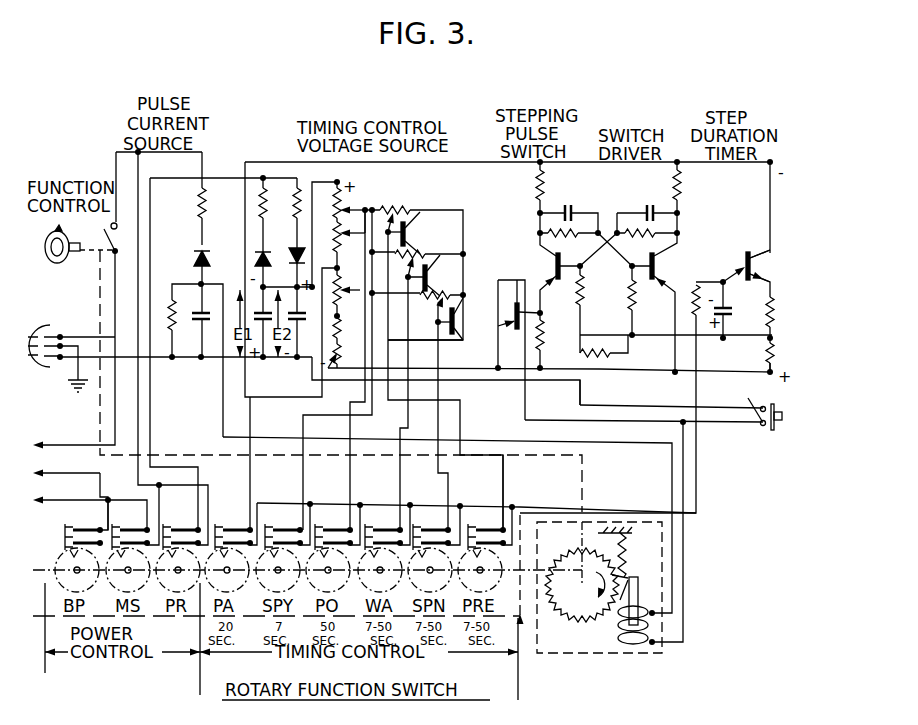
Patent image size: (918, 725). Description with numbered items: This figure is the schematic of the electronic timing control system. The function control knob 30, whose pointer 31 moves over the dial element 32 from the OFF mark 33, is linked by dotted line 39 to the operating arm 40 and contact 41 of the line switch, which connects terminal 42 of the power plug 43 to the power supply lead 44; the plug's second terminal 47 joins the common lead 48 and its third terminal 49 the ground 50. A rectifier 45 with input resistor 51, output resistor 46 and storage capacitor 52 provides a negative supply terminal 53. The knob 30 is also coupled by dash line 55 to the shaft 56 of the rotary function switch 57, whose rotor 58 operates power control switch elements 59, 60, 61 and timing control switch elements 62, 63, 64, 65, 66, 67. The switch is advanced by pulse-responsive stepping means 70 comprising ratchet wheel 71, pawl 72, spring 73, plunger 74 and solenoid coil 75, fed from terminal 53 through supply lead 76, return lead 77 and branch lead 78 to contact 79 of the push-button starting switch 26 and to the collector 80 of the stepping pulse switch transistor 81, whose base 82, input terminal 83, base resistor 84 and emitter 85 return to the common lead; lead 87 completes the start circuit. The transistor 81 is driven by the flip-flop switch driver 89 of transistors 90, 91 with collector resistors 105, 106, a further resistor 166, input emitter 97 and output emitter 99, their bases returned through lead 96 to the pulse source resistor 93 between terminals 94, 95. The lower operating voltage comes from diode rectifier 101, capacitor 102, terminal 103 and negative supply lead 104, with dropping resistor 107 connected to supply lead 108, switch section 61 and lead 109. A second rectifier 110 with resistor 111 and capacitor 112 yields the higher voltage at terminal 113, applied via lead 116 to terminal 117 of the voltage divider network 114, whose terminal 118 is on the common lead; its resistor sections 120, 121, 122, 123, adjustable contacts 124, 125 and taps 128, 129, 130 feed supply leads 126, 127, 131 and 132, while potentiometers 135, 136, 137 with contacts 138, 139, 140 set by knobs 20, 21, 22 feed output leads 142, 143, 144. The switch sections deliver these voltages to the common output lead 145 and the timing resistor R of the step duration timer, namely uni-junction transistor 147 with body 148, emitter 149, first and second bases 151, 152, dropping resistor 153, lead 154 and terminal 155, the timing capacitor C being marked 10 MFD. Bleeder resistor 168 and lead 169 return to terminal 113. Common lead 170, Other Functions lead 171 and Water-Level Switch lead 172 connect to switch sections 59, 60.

The 10 MFD capacitor value 10 is at (645, 399).
The control knob 20 is at (426, 233).
The control knob 21 is at (435, 275).
The control knob 22 is at (459, 325).
The push-button starting switch 26 is at (811, 418).
The function control knob 30 is at (56, 263).
The pointer 31 is at (52, 244).
The dial element 32 is at (68, 264).
The OFF position mark 33 is at (55, 229).
The dotted line connection 39 is at (97, 246).
The operating arm 40 is at (109, 239).
The contact 41 is at (116, 224).
The terminal 42 is at (60, 335).
The power supply line plug 43 is at (47, 330).
The power supply lead 44 is at (203, 170).
The rectifier 45 is at (203, 252).
The output resistor 46 is at (171, 327).
The second line plug terminal 47 is at (57, 359).
The common power supply lead 48 is at (160, 360).
The third terminal 49 is at (62, 345).
The common ground 50 is at (72, 386).
The series voltage-dropping input resistor 51 is at (198, 210).
The storage capacitor 52 is at (204, 314).
The supply terminal 53 is at (200, 282).
The dash line connection 55 is at (190, 455).
The operating shaft 56 is at (545, 565).
The rotary function control switch 57 is at (521, 625).
The rotor 58 is at (52, 560).
The switch element 59 is at (82, 530).
The switch element 60 is at (136, 530).
The switch element 61 is at (174, 530).
The switch element 62 is at (227, 530).
The switch element 63 is at (277, 538).
The switch element 64 is at (327, 540).
The switch element 65 is at (377, 540).
The switch element 66 is at (426, 540).
The switch element 67 is at (480, 540).
The pulse-responsive stepping means 70 is at (754, 570).
The ratchet wheel 71 is at (572, 620).
The driving pawl 72 is at (620, 602).
The return spring 73 is at (624, 553).
The operating plunger 74 is at (631, 578).
The solenoid operating coil 75 is at (640, 648).
The supply lead 76 is at (623, 445).
The return lead 77 is at (685, 548).
The branch lead 78 is at (632, 422).
The contact 79 is at (757, 404).
The collector 80 is at (497, 306).
The stepping pulse switch 81 is at (519, 299).
The base 82 is at (515, 331).
The input terminal 83 is at (541, 313).
The base resistor 84 is at (543, 344).
The emitter 85 is at (498, 326).
The lead 87 is at (609, 406).
The switch driver circuit 89 is at (628, 193).
The transistor 90 is at (588, 260).
The transistor 91 is at (652, 260).
The resistor 93 is at (777, 356).
The positive terminal 94 is at (763, 369).
The negative terminal 95 is at (775, 339).
The lead 96 is at (655, 337).
The input emitter 97 is at (661, 284).
The output emitter 99 is at (550, 276).
The diode rectifier 101 is at (258, 249).
The supply capacitor 102 is at (259, 310).
The supply terminal 103 is at (258, 287).
The negative supply lead 104 is at (487, 164).
The collector circuit resistor 105 is at (534, 183).
The collector circuit resistor 106 is at (682, 196).
The series voltage-dropping resistor 107 is at (267, 200).
The supply lead 108 is at (180, 180).
The series connection lead 109 is at (137, 413).
The diode rectifier 110 is at (294, 256).
The voltage-dropping resistor 111 is at (294, 206).
The storage capacitor 112 is at (304, 350).
The output terminal 113 is at (334, 268).
The voltage divider resistor network 114 is at (424, 182).
The lead 116 is at (337, 202).
The positive terminal 117 is at (331, 181).
The terminal 118 is at (345, 380).
The resistor section 120 is at (338, 232).
The resistor section 121 is at (354, 250).
The resistor section 122 is at (354, 293).
The resistor section 123 is at (550, 367).
The adjustable contact 124 is at (364, 198).
The adjustable contact 125 is at (354, 354).
The positive supply lead 126 is at (304, 455).
The positive supply lead 127 is at (452, 341).
The terminal 128 is at (360, 234).
The terminal 129 is at (354, 330).
The fixed tap 130 is at (357, 284).
The voltage supply lead 131 is at (252, 423).
The lead 132 is at (352, 455).
The potentiometer resistor 135 is at (396, 209).
The potentiometer resistor 136 is at (417, 258).
The potentiometer resistor 137 is at (446, 297).
The movable potentiometer contact 138 is at (396, 233).
The movable potentiometer contact 139 is at (425, 298).
The movable potentiometer contact 140 is at (429, 331).
The output lead 142 is at (506, 487).
The output lead 143 is at (403, 455).
The output lead 144 is at (443, 463).
The common control voltage output lead 145 is at (538, 505).
The uni-junction transistor 147 is at (762, 243).
The semiconductor body 148 is at (740, 262).
The emitter 149 is at (735, 310).
The first base 151 is at (768, 260).
The second base 152 is at (768, 273).
The voltage-dropping resistor 153 is at (775, 312).
The lead 154 is at (771, 202).
The terminal 155 is at (773, 164).
The resistor 166 is at (586, 290).
The series bleeder resistor 168 is at (588, 345).
The circuit lead 169 is at (576, 382).
The common lead 170 is at (73, 348).
The Other Functions lead 171 is at (68, 489).
The Water-Level Switch lead 172 is at (68, 513).